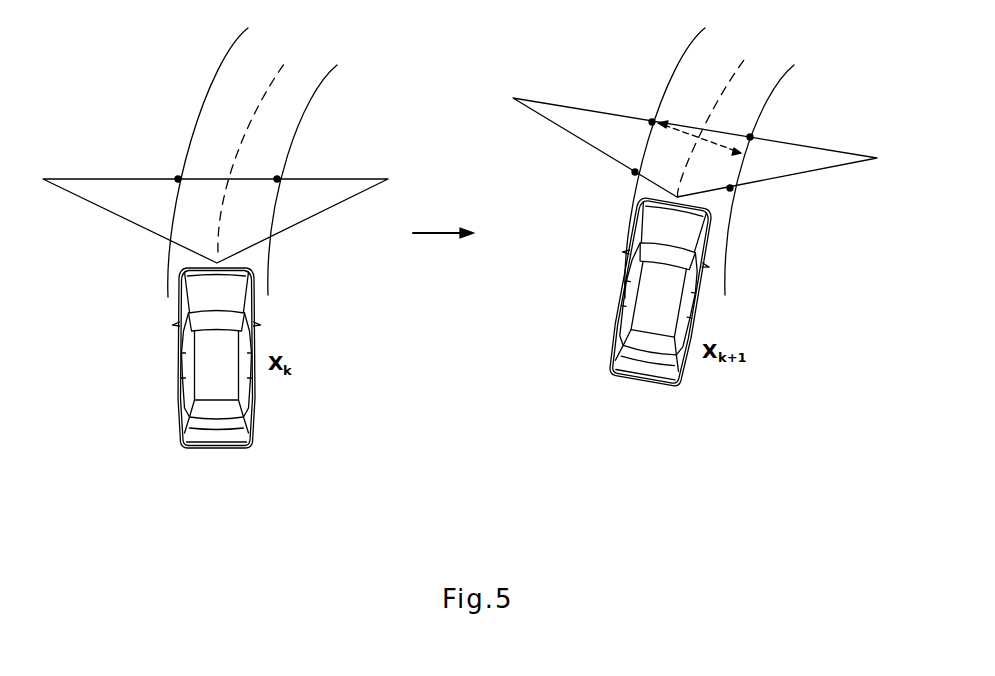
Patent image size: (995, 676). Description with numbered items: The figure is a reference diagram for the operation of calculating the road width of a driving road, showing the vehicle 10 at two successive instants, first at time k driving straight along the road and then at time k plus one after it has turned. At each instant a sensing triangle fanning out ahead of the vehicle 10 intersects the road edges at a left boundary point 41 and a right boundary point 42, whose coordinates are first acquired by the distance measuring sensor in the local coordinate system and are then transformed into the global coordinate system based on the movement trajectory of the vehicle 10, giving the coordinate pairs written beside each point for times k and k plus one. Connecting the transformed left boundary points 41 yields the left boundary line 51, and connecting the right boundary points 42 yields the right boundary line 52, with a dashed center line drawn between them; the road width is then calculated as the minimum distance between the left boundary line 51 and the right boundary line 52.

The vehicle 10 is at (253, 317).
The left boundary point 41 is at (178, 179).
The right boundary point 42 is at (277, 179).
The left boundary line 51 is at (223, 70).
The right boundary line 52 is at (315, 97).